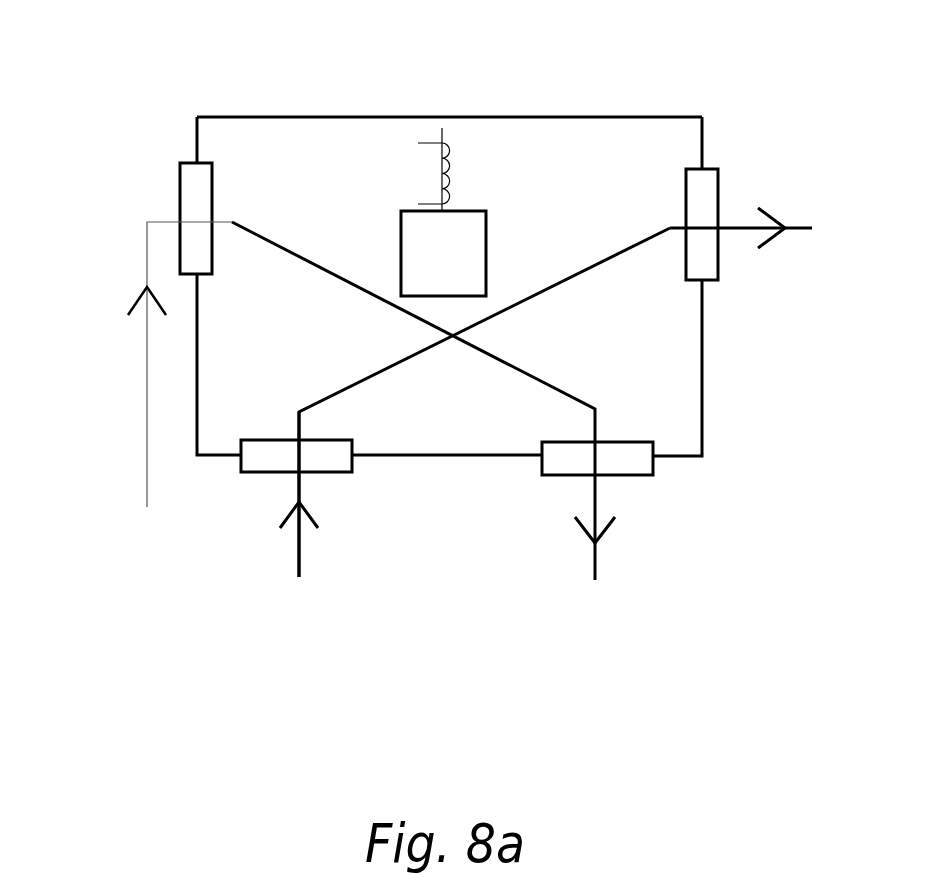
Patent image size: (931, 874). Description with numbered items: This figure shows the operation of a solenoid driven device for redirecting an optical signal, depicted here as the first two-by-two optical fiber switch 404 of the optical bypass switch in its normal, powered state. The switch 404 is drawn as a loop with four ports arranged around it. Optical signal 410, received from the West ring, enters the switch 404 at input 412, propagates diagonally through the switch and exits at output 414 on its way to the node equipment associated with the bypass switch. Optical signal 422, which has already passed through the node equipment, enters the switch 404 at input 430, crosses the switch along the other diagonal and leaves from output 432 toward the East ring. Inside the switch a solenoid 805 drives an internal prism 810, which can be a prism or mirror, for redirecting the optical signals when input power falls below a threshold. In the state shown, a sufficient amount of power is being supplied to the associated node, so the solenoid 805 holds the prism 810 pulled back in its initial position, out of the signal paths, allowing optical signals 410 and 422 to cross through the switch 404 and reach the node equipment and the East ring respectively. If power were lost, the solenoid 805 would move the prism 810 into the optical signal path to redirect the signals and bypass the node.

The first 2×2 optical fiber switch 404 is at (285, 117).
The input 412 is at (180, 185).
The output 432 is at (722, 261).
The input 430 is at (263, 475).
The output 414 is at (637, 485).
The optical signal 410 is at (147, 435).
The optical signal 422 is at (302, 558).
The solenoid 805 is at (443, 253).
The prism 810 is at (475, 175).